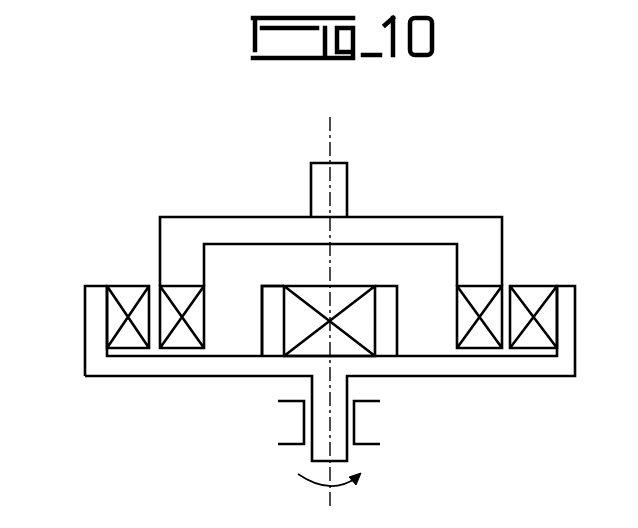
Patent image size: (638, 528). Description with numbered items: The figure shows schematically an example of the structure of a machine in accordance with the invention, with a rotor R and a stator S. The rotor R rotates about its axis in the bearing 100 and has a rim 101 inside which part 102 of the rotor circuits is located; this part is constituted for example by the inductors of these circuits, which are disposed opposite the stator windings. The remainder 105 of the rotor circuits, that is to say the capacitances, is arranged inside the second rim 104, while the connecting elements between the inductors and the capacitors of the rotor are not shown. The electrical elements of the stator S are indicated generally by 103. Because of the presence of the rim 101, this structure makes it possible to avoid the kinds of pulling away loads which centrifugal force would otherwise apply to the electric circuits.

The bearing 100 is at (291, 414).
The rim 101 is at (86, 318).
The part of the rotor circuits 102 is at (120, 286).
The electrical elements of the stator 103 is at (205, 313).
The second rim 104 is at (270, 286).
The remainder of the rotor circuits 105 is at (352, 286).
The stator S is at (480, 218).
The rotor R is at (527, 378).